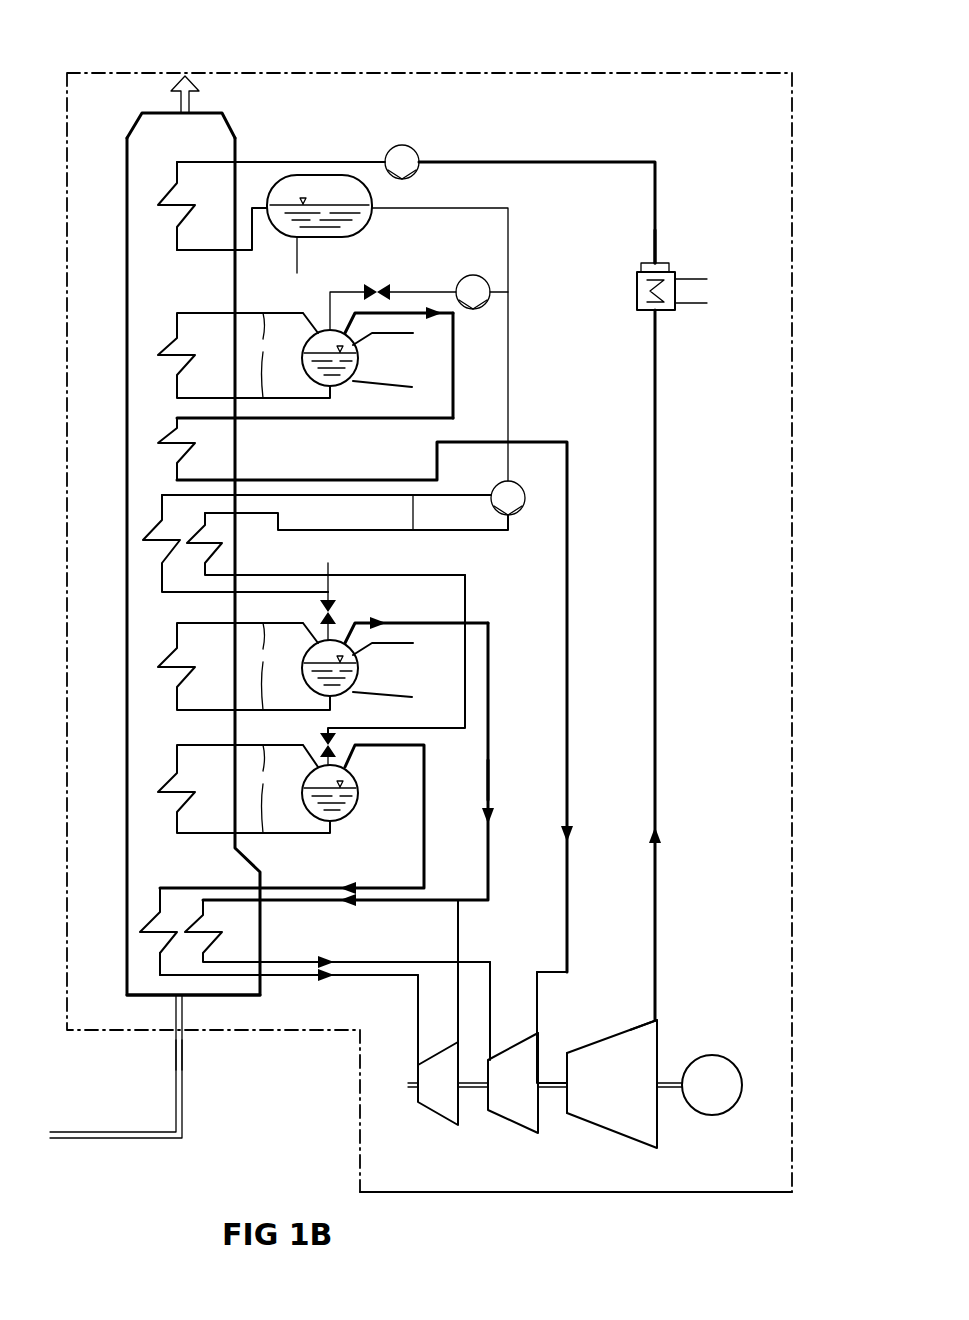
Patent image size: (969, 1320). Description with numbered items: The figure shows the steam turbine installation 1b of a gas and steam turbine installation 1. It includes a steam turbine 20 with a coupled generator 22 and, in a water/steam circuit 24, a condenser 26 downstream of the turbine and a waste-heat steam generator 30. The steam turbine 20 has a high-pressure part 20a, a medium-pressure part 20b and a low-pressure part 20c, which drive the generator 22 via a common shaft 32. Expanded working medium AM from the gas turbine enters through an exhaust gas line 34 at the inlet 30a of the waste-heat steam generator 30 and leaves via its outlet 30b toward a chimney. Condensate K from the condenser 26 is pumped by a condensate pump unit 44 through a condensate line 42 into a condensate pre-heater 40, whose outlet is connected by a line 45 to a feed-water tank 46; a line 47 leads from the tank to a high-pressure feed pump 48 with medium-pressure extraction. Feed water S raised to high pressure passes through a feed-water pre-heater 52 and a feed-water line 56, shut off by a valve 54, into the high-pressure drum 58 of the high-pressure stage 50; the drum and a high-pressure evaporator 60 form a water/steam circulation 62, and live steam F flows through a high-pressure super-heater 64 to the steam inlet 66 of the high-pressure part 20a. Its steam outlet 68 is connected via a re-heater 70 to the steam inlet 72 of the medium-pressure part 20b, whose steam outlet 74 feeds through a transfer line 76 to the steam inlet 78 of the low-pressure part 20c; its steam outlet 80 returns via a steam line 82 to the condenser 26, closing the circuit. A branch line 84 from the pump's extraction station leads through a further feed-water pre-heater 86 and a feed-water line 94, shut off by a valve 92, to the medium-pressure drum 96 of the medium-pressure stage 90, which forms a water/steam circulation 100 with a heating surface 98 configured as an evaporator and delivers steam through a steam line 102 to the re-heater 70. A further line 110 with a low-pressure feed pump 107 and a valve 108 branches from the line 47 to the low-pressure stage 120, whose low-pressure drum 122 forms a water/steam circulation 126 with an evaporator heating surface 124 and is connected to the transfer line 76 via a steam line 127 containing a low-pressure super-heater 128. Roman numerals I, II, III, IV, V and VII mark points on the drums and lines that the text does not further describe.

The gas and steam turbine installation 1 is at (374, 1200).
The steam turbine installation 1b is at (556, 1176).
The steam turbine 20 is at (676, 1149).
The high-pressure part 20a is at (435, 1098).
The medium-pressure part 20b is at (505, 1108).
The low-pressure part 20c is at (617, 1108).
The generator 22 is at (713, 1057).
The water/steam circuit 24 is at (656, 238).
The condenser 26 is at (637, 292).
The waste-heat steam generator 30 is at (125, 781).
The inlet 30a is at (230, 998).
The outlet 30b is at (132, 126).
The common shaft 32 is at (550, 1090).
The exhaust gas line 34 is at (175, 1095).
The condensate pre-heater 40 is at (177, 240).
The condensate line 42 is at (306, 160).
The condensate pump unit 44 is at (398, 145).
The line 45 is at (247, 214).
The feed-water tank 46 is at (376, 195).
The line 47 is at (480, 205).
The high-pressure feed pump 48 is at (516, 483).
The high-pressure stage 50 is at (130, 861).
The feed-water pre-heater 52 is at (200, 548).
The valve 54 is at (320, 740).
The feed-water line 56 is at (465, 597).
The high-pressure drum 58 is at (358, 793).
The high-pressure evaporator 60 is at (170, 793).
The water/steam circulation 62 is at (253, 789).
The high-pressure super-heater 64 is at (153, 935).
The steam inlet 66 is at (418, 1067).
The steam outlet 68 is at (458, 1045).
The re-heater 70 is at (200, 937).
The steam inlet 72 is at (488, 1060).
The steam outlet 74 is at (537, 1035).
The transfer line 76 is at (553, 972).
The steam inlet 78 is at (567, 1050).
The steam outlet 80 is at (657, 1020).
The steam line 82 is at (658, 610).
The branch line 84 is at (292, 493).
The feed-water pre-heater 86 is at (152, 542).
The medium-pressure stage 90 is at (130, 643).
The valve 92 is at (337, 606).
The feed-water line 94 is at (257, 592).
The medium-pressure drum 96 is at (358, 668).
The heating surface 98 is at (170, 667).
The water/steam circulation 100 is at (245, 666).
The steam line 102 is at (490, 718).
The low-pressure feed pump 107 is at (482, 282).
The valve 108 is at (387, 285).
The further line 110 is at (408, 287).
The low-pressure stage 120 is at (126, 329).
The low-pressure drum 122 is at (358, 358).
The heating surface 124 is at (170, 357).
The water/steam circulation 126 is at (245, 355).
The steam line 127 is at (345, 420).
The low-pressure super-heater 128 is at (170, 450).
The condensate K is at (656, 198).
The feed water S is at (430, 497).
The live steam F is at (424, 853).
The working medium AM is at (182, 1055).
The measuring point I is at (391, 336).
The measuring point II is at (393, 387).
The measuring point III is at (398, 646).
The measuring point IV is at (395, 699).
The measuring point V is at (413, 529).
The measuring point VII is at (328, 568).